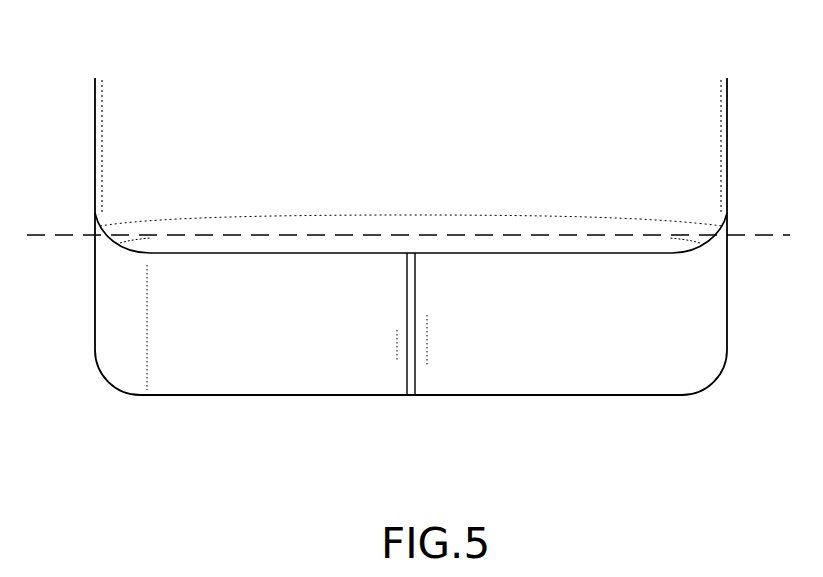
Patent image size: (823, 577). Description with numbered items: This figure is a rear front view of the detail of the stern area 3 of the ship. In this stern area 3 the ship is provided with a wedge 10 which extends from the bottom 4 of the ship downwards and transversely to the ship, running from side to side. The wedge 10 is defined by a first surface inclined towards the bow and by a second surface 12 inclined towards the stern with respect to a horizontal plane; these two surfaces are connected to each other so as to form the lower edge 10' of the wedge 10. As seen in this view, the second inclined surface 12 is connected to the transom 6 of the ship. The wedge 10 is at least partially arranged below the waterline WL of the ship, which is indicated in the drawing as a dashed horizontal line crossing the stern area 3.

The stern area 3 is at (750, 286).
The bottom 4 is at (630, 337).
The transom 6 is at (404, 156).
The wedge 10 is at (161, 362).
The lower edge 10' is at (273, 368).
The second surface 12 is at (487, 242).
The waterline WL is at (64, 235).